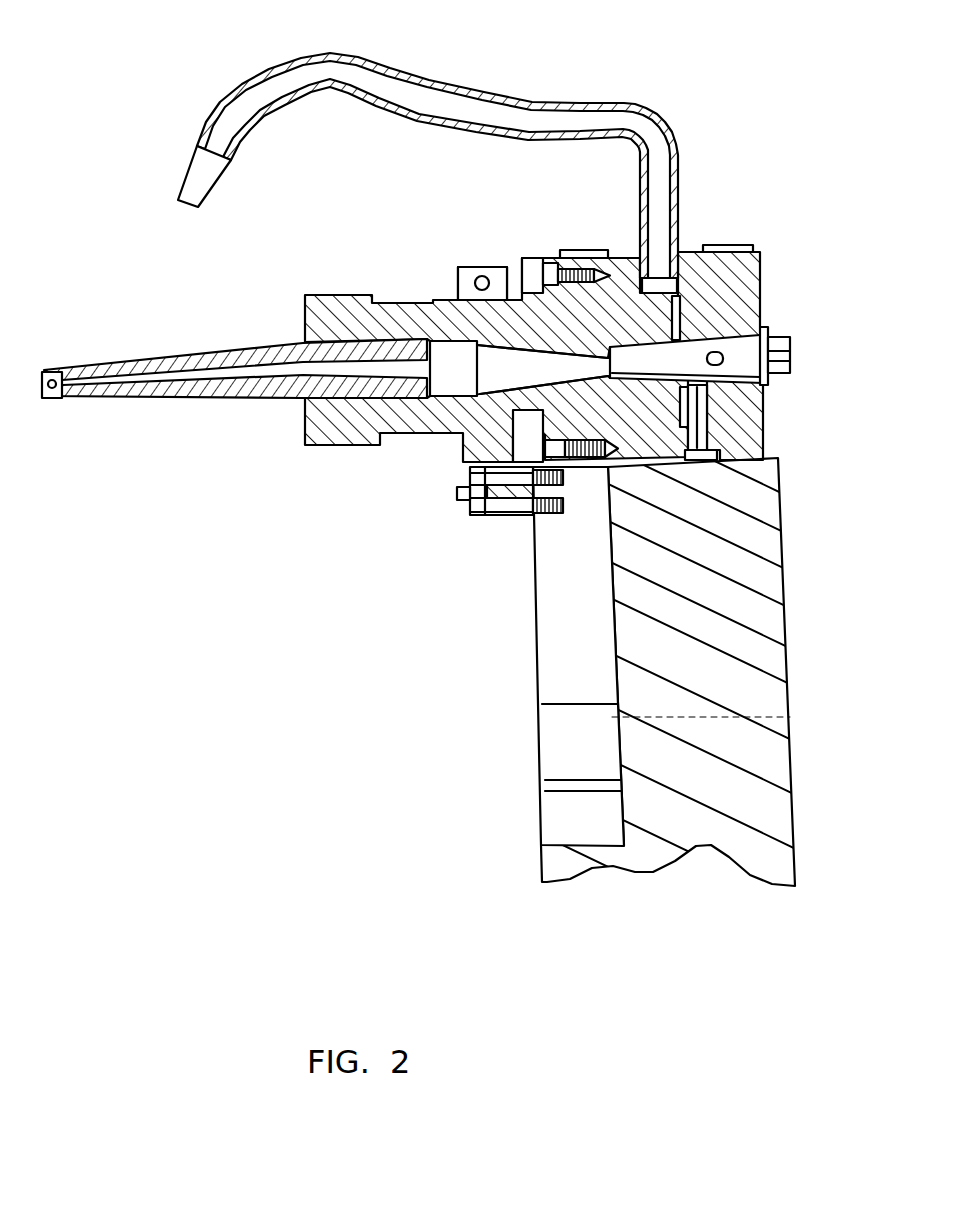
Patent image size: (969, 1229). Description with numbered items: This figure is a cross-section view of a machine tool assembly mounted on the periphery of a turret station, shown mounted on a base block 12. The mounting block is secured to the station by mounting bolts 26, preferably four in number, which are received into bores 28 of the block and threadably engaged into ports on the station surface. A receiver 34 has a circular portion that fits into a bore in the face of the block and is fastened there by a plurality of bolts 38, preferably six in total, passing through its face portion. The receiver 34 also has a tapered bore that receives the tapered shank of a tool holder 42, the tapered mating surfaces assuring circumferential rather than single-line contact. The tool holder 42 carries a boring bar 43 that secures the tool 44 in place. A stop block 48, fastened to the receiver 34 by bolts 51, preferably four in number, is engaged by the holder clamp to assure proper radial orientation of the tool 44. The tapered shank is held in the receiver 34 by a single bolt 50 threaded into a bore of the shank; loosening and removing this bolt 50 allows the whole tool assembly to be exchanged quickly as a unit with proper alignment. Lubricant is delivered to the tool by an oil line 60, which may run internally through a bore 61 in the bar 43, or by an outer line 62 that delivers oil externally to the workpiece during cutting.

The machine base block 12 is at (770, 592).
The mounting bolts 26 is at (590, 251).
The bores 28 is at (742, 290).
The receiver 34 is at (603, 462).
The bolts 38 is at (515, 258).
The tool holder 42 is at (468, 266).
The boring bar 43 is at (241, 392).
The tool 44 is at (57, 372).
The stop block 48 is at (463, 470).
The bolt 50 is at (790, 351).
The bolts 51 is at (467, 512).
The oil line 60 is at (660, 266).
The bore 61 is at (295, 345).
The outer line 62 is at (390, 68).